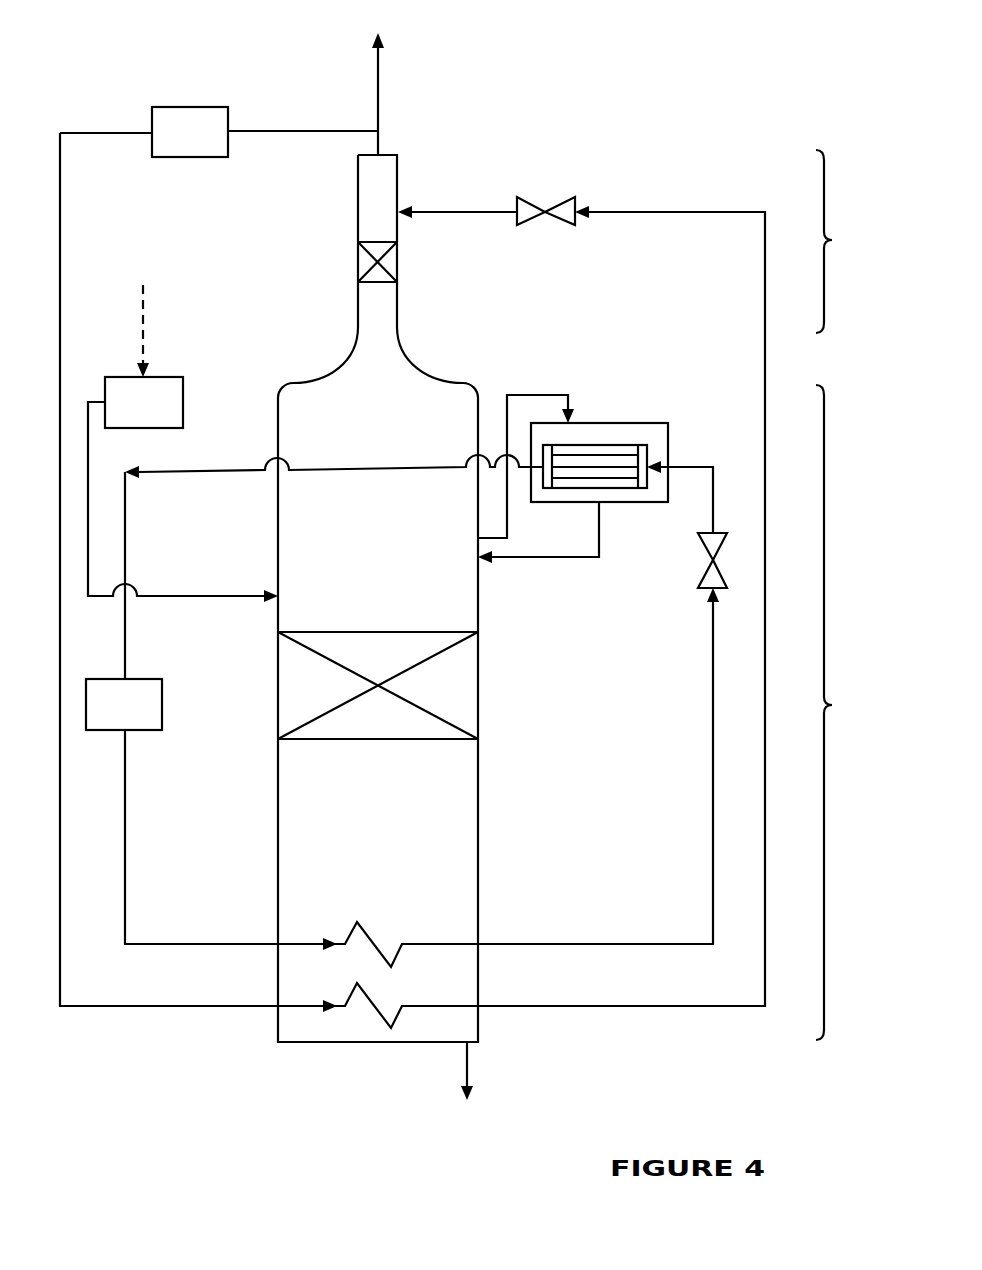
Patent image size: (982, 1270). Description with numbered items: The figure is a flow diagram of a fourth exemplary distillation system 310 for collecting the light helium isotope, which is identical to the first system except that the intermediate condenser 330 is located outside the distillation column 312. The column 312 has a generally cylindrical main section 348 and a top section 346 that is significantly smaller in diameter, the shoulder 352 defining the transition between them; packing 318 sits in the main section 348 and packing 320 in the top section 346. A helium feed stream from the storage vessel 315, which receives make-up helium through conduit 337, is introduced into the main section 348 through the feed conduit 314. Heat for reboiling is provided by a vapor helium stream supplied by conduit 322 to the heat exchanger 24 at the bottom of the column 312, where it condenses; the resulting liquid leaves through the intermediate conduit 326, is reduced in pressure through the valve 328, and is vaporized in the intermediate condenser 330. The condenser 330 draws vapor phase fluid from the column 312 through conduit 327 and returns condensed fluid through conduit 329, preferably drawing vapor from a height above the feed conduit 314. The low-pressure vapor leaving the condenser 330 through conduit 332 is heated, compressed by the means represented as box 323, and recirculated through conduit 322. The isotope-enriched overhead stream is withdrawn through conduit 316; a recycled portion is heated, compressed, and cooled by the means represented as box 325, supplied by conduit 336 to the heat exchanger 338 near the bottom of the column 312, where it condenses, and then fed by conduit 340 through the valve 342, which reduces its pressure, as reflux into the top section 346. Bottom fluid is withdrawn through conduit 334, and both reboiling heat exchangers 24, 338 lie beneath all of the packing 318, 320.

The distillation system 310 is at (648, 128).
The distillation column 312 is at (452, 410).
The shoulder 352 is at (450, 382).
The packing 320 is at (360, 262).
The overhead conduit 316 is at (378, 68).
The heating, compressing and cooling means 325 is at (206, 143).
The conduit 336 is at (85, 1005).
The make-up helium conduit 337 is at (142, 335).
The storage vessel 315 is at (160, 390).
The feed conduit 314 is at (185, 598).
The conduit 332 is at (223, 468).
The conduit 322 is at (152, 942).
The compressor 323 is at (140, 705).
The packing 318 is at (460, 682).
The heat exchanger 24 is at (372, 945).
The heat exchanger 338 is at (370, 1007).
The conduit 334 is at (467, 1065).
The intermediate conduit 326 is at (714, 781).
The valve 328 is at (722, 533).
The intermediate condenser 330 is at (618, 445).
The conduit 327 is at (505, 525).
The conduit 329 is at (550, 557).
The valve 342 is at (535, 200).
The conduit 340 is at (620, 1008).
The top section 346 is at (850, 241).
The main section 348 is at (850, 712).